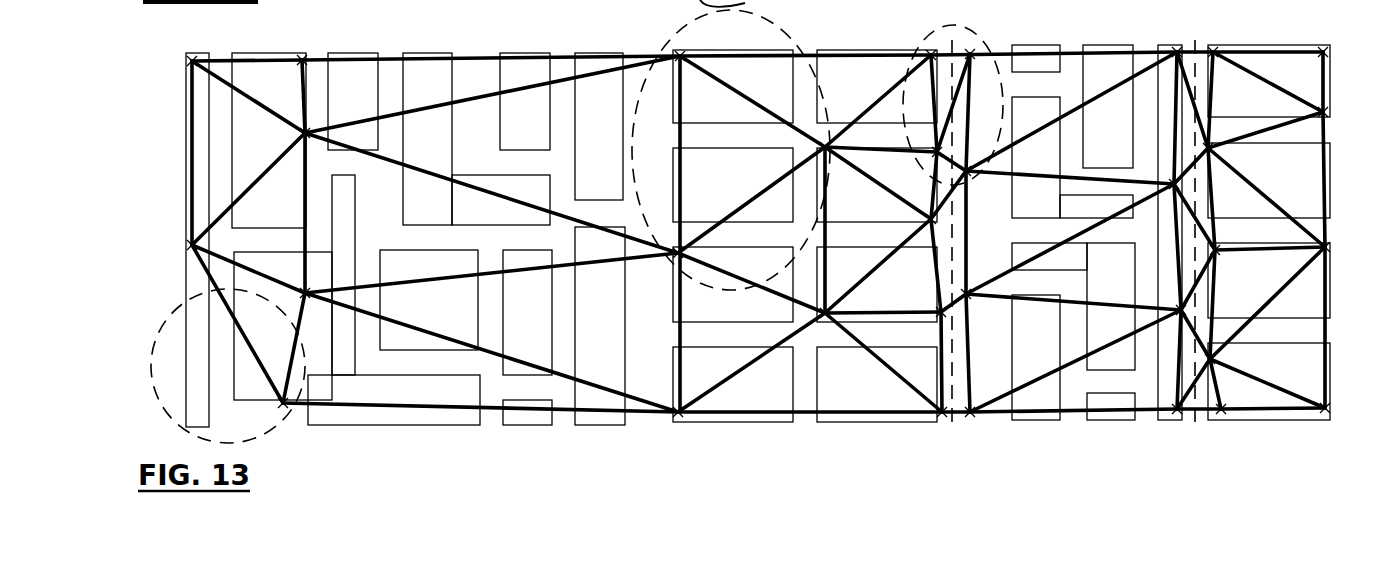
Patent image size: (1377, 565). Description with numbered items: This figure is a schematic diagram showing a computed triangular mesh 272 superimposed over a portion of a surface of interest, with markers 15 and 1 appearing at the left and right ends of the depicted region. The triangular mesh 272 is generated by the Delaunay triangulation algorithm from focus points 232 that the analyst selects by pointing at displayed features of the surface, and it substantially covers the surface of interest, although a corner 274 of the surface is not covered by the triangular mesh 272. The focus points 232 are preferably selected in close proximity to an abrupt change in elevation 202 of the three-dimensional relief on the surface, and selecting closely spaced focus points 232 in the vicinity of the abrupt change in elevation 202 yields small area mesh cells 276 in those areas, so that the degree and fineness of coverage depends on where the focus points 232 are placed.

The section line 15 is at (178, 62).
The section line 1 is at (1345, 52).
The triangular mesh 272 is at (474, 52).
The small area mesh cells 276 is at (936, 22).
The abrupt change in elevation 202 is at (1195, 24).
The corner 274 is at (160, 338).
The focus points 232 is at (938, 432).